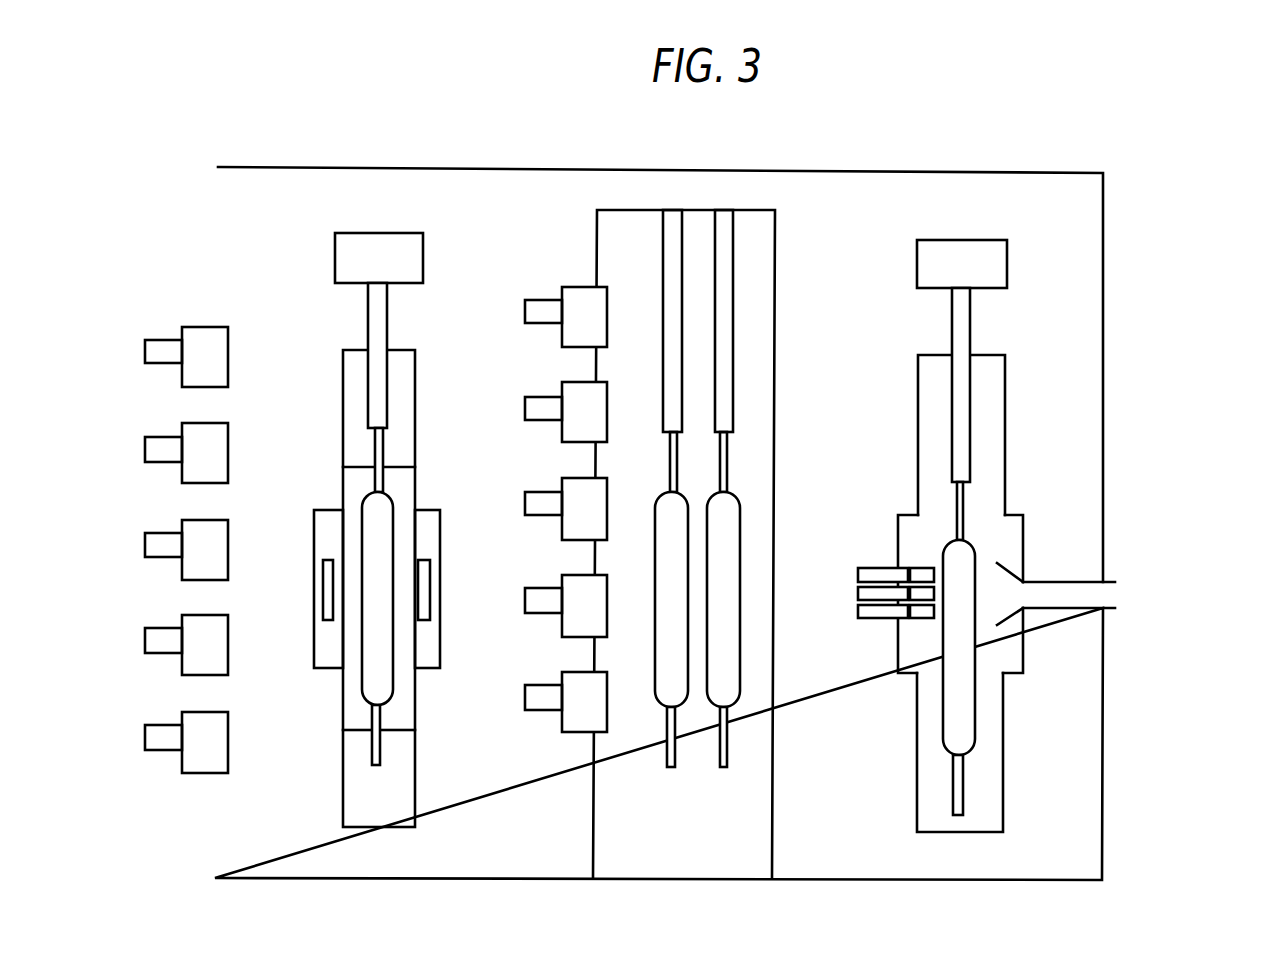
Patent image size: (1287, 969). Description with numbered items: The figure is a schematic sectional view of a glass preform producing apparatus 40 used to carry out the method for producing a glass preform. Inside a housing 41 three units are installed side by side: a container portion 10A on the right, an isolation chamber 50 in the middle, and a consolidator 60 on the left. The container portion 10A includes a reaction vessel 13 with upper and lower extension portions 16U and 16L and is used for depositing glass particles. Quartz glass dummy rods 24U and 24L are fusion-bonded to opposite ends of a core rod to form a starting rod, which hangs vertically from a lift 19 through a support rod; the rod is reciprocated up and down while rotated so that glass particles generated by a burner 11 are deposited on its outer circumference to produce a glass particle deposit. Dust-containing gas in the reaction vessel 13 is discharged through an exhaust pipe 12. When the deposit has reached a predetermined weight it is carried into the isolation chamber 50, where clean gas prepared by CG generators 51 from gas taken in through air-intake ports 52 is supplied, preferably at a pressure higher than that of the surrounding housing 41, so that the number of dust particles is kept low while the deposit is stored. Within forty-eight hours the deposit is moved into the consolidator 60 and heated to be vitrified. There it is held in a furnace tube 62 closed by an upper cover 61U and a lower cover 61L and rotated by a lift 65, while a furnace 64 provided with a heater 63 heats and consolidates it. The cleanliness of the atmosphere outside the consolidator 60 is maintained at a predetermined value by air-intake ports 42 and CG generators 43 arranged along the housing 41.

The glass preform producing apparatus 40 is at (1158, 263).
The housing 41 is at (1103, 320).
The air-intake ports 42 is at (155, 364).
The CG generators 43 is at (187, 327).
The isolation chamber 50 is at (674, 528).
The CG generators 51 is at (572, 287).
The air-intake ports 52 is at (541, 324).
The consolidator 60 is at (305, 553).
The upper cover 61U is at (343, 370).
The lower cover 61L is at (343, 767).
The furnace tube 62 is at (343, 492).
The heater 63 is at (328, 620).
The furnace 64 is at (314, 545).
The lift 65 is at (335, 262).
The container portion 10A is at (952, 528).
The burner 11 is at (858, 612).
The exhaust pipe 12 is at (1043, 610).
The reaction vessel 13 is at (1010, 515).
The upper extension portion 16U is at (918, 380).
The lower extension portion 16L is at (915, 783).
The lift 19 is at (935, 240).
The upper dummy rod 24U is at (967, 490).
The lower dummy rod 24L is at (963, 780).